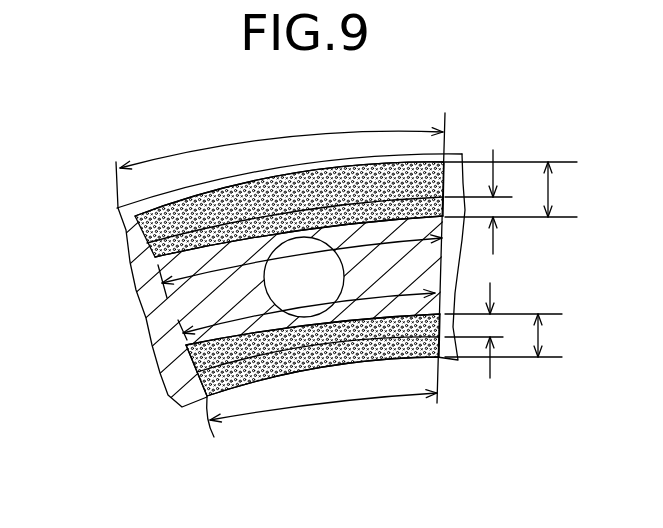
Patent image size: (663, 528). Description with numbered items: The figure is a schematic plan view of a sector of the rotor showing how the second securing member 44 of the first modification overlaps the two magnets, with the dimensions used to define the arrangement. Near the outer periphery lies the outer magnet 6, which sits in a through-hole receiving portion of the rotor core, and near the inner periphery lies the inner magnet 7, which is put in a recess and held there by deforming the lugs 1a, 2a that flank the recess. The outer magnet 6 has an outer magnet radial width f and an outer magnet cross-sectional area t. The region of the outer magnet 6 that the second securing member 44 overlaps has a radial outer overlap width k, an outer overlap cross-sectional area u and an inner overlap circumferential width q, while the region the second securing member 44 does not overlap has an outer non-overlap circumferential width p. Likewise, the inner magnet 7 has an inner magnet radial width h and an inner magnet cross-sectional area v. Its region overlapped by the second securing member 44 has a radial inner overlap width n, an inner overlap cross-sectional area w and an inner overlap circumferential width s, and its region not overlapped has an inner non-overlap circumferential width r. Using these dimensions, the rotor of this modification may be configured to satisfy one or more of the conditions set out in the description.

The outer magnet 6 is at (141, 236).
The second securing member 44 is at (180, 312).
The inner magnet 7 is at (278, 381).
The lug 2a is at (208, 422).
The lug 1a is at (330, 377).
The outer magnet cross-sectional area t is at (210, 193).
The outer overlap cross-sectional area u is at (390, 162).
The inner overlap cross-sectional area w is at (162, 348).
The inner magnet cross-sectional area v is at (172, 389).
The outer non-overlap circumferential width p is at (279, 158).
The inner overlap circumferential width q is at (302, 259).
The inner overlap circumferential width s is at (309, 303).
The inner non-overlap circumferential width r is at (323, 409).
The outer overlap width k is at (511, 202).
The outer magnet radial width f is at (558, 189).
The inner overlap width n is at (503, 330).
The inner magnet radial width h is at (554, 335).